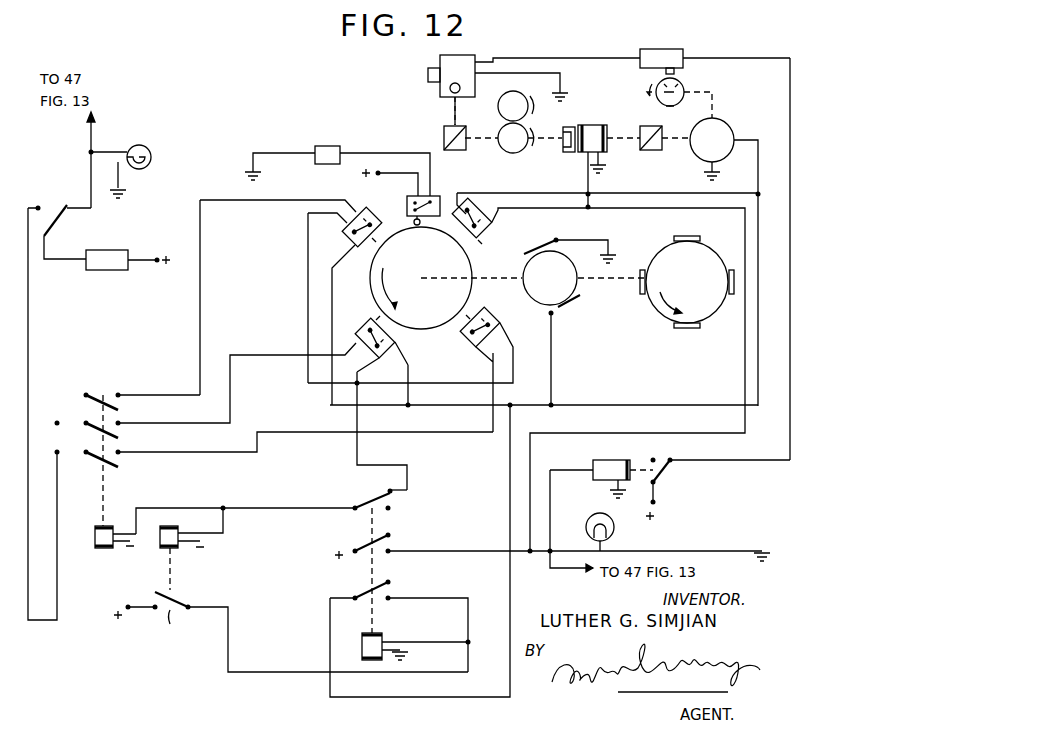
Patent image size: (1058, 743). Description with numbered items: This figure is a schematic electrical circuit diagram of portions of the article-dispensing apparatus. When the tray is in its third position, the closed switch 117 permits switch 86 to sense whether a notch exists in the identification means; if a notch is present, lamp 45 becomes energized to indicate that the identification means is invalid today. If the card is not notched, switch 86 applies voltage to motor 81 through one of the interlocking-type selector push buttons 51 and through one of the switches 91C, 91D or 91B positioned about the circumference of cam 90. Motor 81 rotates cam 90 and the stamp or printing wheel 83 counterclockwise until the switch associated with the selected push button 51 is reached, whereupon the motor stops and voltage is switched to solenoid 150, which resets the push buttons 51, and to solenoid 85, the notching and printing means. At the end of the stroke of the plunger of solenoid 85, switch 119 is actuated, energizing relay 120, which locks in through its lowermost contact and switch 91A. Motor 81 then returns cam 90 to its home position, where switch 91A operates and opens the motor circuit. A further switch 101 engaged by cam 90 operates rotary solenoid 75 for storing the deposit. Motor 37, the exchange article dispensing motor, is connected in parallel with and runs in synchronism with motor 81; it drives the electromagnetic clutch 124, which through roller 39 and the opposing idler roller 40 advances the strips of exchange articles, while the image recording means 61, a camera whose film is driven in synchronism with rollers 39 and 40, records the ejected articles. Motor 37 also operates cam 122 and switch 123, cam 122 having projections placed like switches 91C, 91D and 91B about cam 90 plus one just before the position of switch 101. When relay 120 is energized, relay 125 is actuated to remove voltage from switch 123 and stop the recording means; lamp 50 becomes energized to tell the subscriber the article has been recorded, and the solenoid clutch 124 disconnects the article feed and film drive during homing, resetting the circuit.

The lamp 45 is at (148, 147).
The switch 86 is at (55, 212).
The switch 117 is at (128, 256).
The rotary solenoid 75 is at (322, 146).
The switch 101 is at (440, 190).
The image recording means 61 is at (463, 58).
The idler roller 40 is at (509, 98).
The roller 39 is at (524, 152).
The electromagnetic clutch 124 is at (600, 117).
The switch 123 is at (683, 50).
The cam 122 is at (689, 87).
The motor 37 is at (728, 136).
The cam 90 is at (470, 282).
The switch 91A is at (492, 230).
The switch 91B is at (464, 342).
The switch 91C is at (348, 234).
The switch 91D is at (362, 326).
The motor 81 is at (531, 266).
The printing wheel 83 is at (703, 250).
The push buttons 51 is at (86, 455).
The solenoid 150 is at (106, 548).
The solenoid 85 is at (176, 548).
The switch 119 is at (171, 619).
The relay 120 is at (385, 640).
The relay 125 is at (602, 462).
The lamp 50 is at (591, 522).